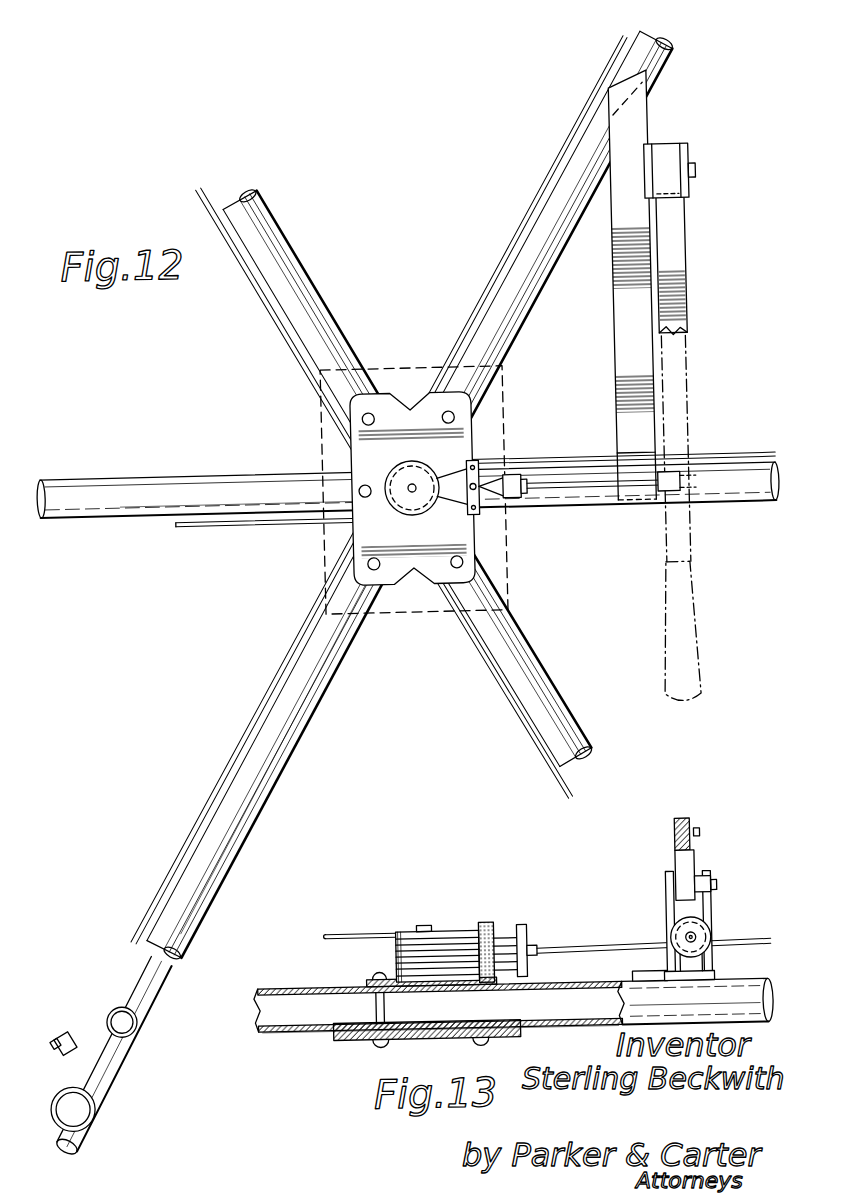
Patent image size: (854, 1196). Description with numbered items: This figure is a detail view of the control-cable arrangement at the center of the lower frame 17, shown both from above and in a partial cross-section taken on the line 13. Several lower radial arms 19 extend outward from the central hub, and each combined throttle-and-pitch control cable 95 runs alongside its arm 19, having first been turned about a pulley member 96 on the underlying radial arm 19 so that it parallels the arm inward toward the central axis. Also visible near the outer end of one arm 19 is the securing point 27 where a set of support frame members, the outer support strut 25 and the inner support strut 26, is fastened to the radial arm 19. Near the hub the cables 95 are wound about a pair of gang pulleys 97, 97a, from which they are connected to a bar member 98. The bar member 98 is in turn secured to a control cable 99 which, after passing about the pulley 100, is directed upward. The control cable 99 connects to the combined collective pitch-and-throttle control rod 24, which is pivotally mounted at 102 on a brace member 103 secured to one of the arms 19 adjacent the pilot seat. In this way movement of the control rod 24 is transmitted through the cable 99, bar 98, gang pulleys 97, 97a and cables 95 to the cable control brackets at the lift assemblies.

In FIG. 12, the section line 13 is at (196, 500).
In FIG. 12, the lower frame 17 is at (256, 811).
In FIG. 13, the lower frame 17 is at (270, 1030).
In FIG. 12, the lower arm 19 is at (286, 229).
In FIG. 13, the lower arm 19 is at (286, 984).
In FIG. 12, the control rod 24 is at (690, 292).
In FIG. 13, the control rod 24 is at (693, 822).
In FIG. 12, the outer support strut 25 is at (80, 1112).
In FIG. 12, the inner support strut 26 is at (127, 1013).
In FIG. 12, the securing point 27 is at (106, 1061).
In FIG. 12, the combined throttle-and-pitch control cable 95 is at (266, 318).
In FIG. 13, the combined throttle-and-pitch control cable 95 is at (336, 930).
In FIG. 12, the pulley member 96 is at (62, 1032).
In FIG. 12, the gang pulley 97 is at (419, 510).
In FIG. 13, the gang pulley 97 is at (440, 928).
In FIG. 12, the gang pulley 97a is at (478, 490).
In FIG. 13, the gang pulley 97a is at (490, 924).
In FIG. 12, the bar member 98 is at (515, 503).
In FIG. 13, the bar member 98 is at (532, 944).
In FIG. 12, the control cable 99 is at (585, 497).
In FIG. 13, the control cable 99 is at (596, 948).
In FIG. 13, the pulley 100 is at (710, 940).
In FIG. 12, the pivot mounting 102 is at (702, 180).
In FIG. 13, the pivot mounting 102 is at (715, 889).
In FIG. 12, the brace member 103 is at (622, 280).
In FIG. 13, the brace member 103 is at (645, 974).